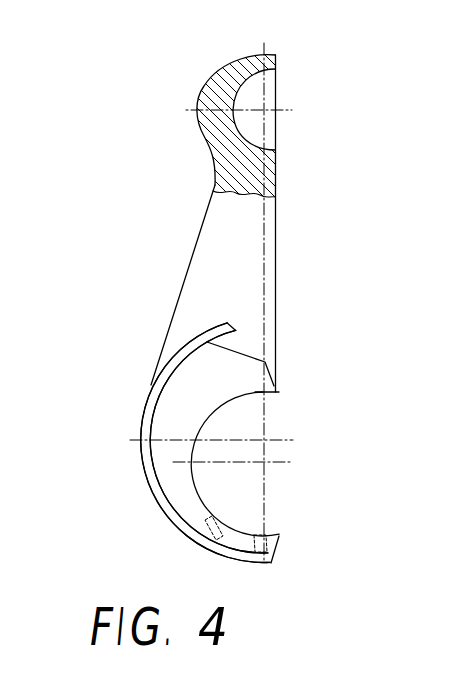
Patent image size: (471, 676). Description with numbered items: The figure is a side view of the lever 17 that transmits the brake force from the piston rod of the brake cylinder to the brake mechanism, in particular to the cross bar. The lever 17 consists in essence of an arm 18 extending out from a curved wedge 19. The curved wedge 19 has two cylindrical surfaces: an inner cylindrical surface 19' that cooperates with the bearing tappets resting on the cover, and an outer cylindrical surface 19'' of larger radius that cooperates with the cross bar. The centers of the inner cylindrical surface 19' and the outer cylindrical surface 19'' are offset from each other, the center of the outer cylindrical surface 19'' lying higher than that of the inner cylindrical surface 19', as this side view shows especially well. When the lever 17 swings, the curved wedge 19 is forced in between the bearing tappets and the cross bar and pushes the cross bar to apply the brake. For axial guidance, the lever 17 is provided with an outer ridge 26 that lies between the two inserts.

The lever 17 is at (186, 248).
The arm 18 is at (277, 233).
The curved wedge 19 is at (181, 443).
The inner cylindrical surface 19' is at (257, 464).
The outer cylindrical surface 19'' is at (170, 441).
The outer ridge 26 is at (143, 426).